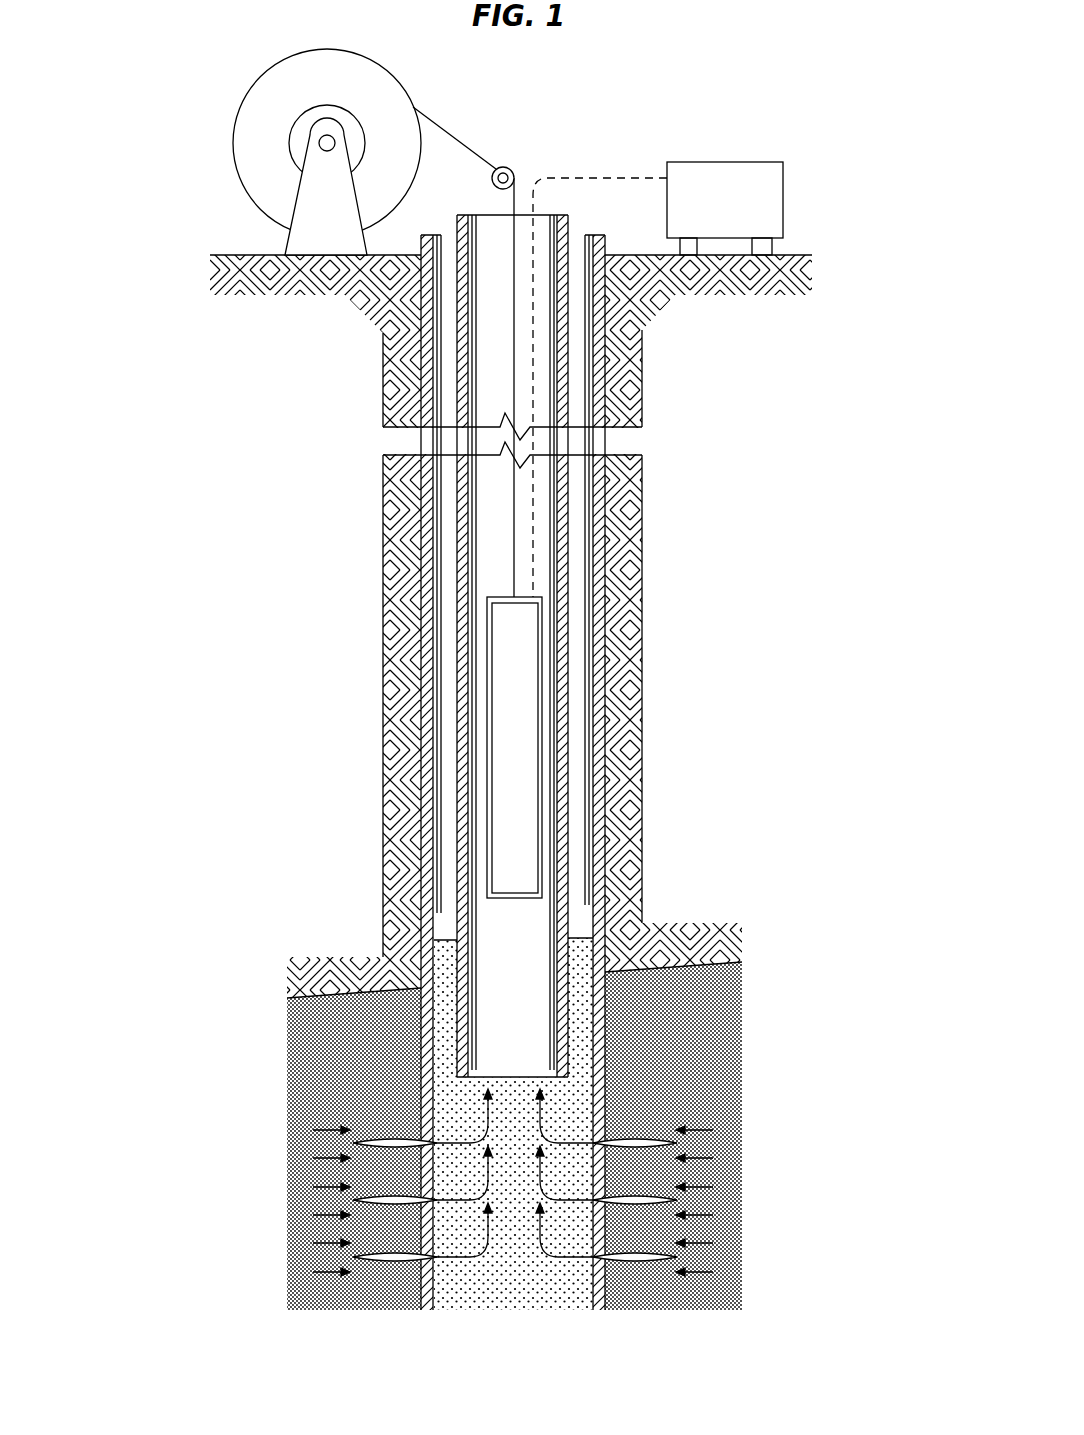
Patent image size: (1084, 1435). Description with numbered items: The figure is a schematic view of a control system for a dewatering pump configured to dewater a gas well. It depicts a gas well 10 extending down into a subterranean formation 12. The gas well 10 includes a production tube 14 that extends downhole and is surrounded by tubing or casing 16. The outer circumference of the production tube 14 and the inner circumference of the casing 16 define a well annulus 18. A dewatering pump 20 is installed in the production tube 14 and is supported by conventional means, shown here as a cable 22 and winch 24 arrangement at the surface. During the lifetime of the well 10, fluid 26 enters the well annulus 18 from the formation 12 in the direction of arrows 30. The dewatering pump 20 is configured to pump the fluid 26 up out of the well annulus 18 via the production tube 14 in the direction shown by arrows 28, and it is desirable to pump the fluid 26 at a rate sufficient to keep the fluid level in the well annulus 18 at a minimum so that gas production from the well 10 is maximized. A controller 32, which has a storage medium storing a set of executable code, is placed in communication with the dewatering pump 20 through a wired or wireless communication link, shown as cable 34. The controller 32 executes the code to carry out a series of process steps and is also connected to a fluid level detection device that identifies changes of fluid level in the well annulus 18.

The gas well 10 is at (408, 568).
The subterranean formation 12 is at (699, 1045).
The production tube 14 is at (570, 544).
The casing 16 is at (605, 753).
The well annulus 18 is at (580, 617).
The dewatering pump 20 is at (527, 700).
The cable 22 is at (447, 130).
The winch 24 is at (313, 213).
The fluid 26 is at (441, 940).
The arrows 28 is at (560, 1250).
The arrows 30 is at (327, 1190).
The controller 32 is at (711, 213).
The cable 34 is at (620, 178).